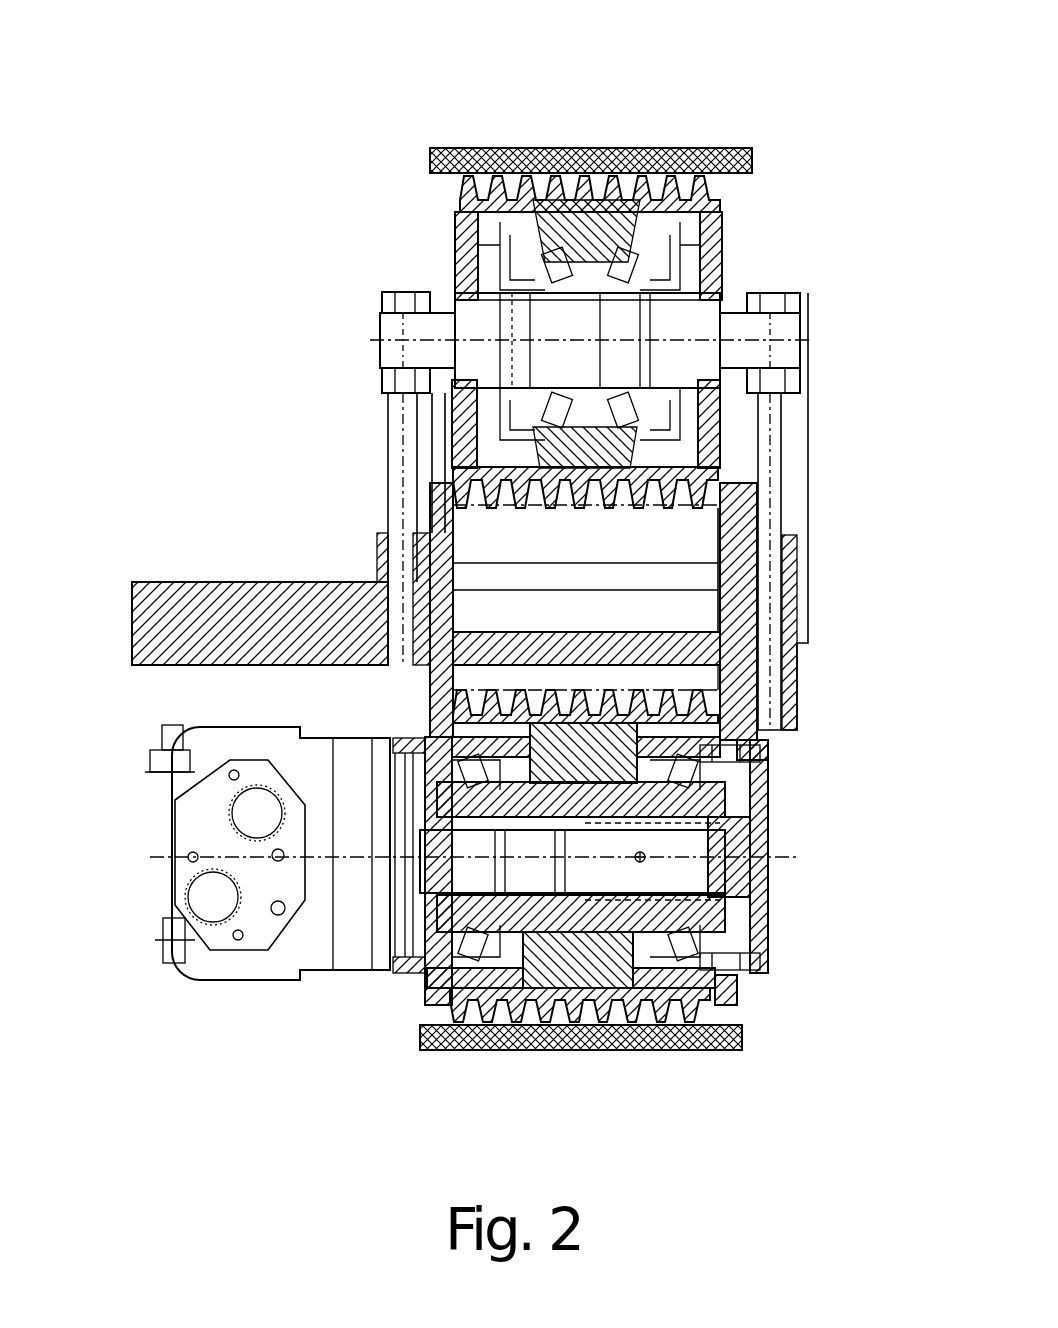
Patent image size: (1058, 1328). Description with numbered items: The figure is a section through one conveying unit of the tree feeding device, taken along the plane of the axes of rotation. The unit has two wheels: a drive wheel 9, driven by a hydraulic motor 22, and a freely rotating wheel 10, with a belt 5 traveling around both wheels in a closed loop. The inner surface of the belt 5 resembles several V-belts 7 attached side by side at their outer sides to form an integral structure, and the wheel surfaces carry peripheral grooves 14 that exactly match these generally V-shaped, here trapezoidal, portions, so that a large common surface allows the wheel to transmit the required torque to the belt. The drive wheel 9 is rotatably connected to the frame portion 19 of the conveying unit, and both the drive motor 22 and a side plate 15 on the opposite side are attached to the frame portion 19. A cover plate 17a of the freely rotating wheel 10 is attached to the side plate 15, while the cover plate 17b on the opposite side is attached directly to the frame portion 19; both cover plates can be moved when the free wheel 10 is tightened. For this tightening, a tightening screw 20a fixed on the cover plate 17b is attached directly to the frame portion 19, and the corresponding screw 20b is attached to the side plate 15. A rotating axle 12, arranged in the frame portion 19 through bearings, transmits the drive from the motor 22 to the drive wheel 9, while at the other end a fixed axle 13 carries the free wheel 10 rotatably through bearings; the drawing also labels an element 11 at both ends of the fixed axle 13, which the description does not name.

The belt 5 is at (558, 150).
The V-belts 7 is at (650, 150).
The drive wheel 9 is at (735, 725).
The freely rotating wheel 10 is at (720, 183).
The nut 11 is at (392, 343).
The rotating axle 12 is at (700, 806).
The fixed axle 13 is at (725, 275).
The peripheral grooves 14 is at (757, 523).
The side plate 15 is at (735, 605).
The cover plate 17a is at (722, 222).
The cover plate 17b is at (452, 270).
The frame portion 19 is at (405, 555).
The tightening screw 20a is at (400, 437).
The tightening screw 20b is at (768, 448).
The hydraulic motor 22 is at (190, 825).